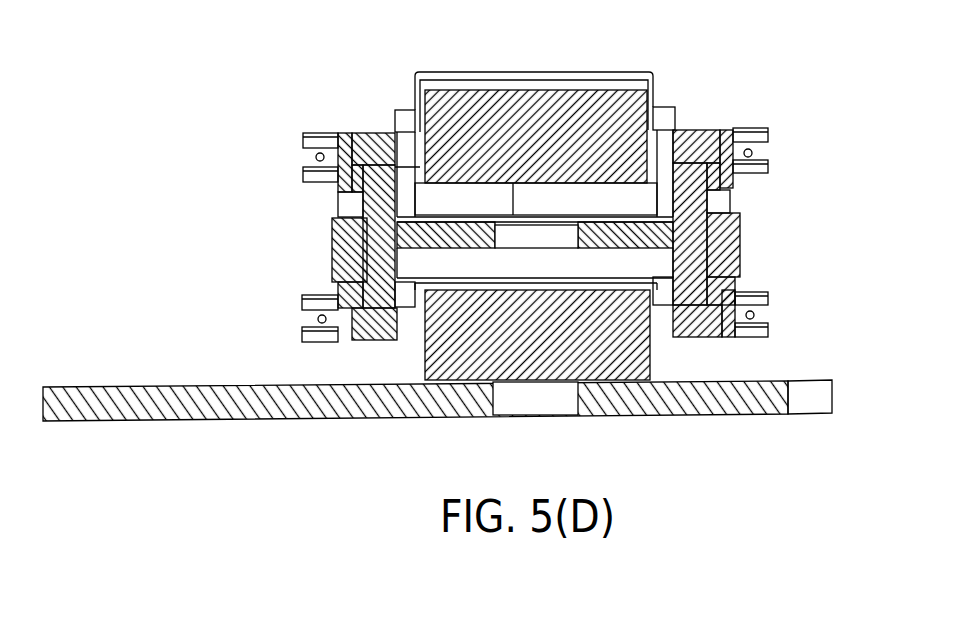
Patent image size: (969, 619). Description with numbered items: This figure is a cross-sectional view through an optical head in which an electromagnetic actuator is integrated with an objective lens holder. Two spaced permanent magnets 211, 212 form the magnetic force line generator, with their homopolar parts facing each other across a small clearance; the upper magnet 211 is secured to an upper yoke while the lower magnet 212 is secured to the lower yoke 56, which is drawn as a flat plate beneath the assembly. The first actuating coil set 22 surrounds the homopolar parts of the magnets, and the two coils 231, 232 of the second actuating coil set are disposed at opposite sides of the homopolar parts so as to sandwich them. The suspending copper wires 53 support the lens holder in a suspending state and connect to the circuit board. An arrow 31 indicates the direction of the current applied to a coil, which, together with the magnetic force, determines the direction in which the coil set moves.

The permanent magnet 211 is at (514, 107).
The permanent magnet 212 is at (583, 355).
The first actuating coil set 22 is at (332, 250).
The coil 231 is at (697, 130).
The coil 232 is at (380, 132).
The arrow indicating current direction 31 is at (740, 327).
The suspending copper wires 53 is at (316, 157).
The lower yoke 56 is at (330, 407).